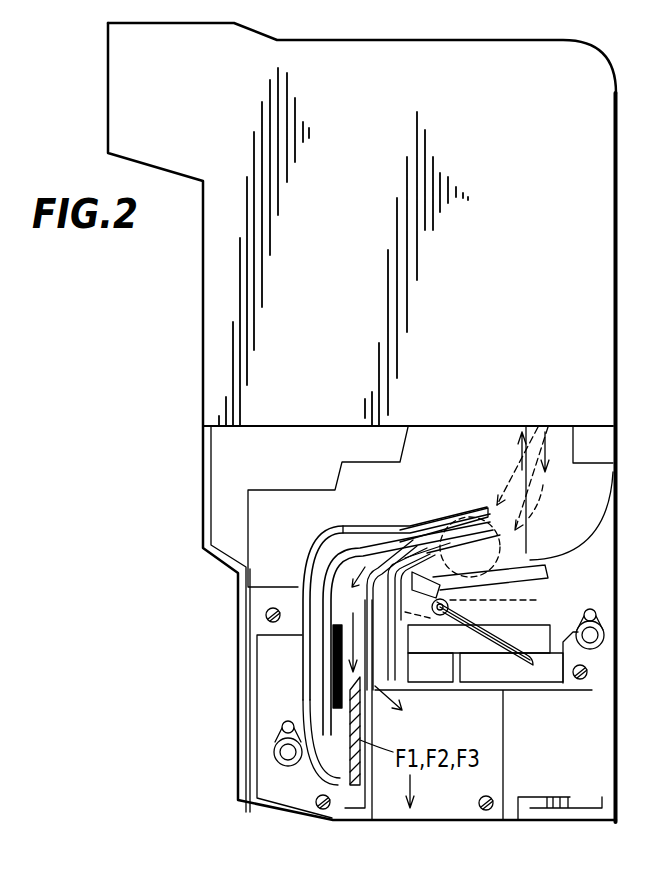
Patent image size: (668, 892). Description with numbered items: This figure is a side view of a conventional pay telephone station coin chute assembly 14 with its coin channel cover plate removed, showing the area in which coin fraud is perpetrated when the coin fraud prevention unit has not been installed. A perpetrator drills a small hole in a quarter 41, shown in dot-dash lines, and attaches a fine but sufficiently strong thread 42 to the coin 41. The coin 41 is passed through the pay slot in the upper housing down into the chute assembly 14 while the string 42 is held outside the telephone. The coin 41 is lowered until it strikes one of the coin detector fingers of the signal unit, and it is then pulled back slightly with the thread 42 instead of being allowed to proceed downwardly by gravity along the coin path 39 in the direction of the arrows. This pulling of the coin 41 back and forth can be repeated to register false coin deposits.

The coin chute assembly 14 is at (616, 363).
The coin path 39 is at (488, 508).
The quarter 41 is at (535, 558).
The thread 42 is at (538, 427).